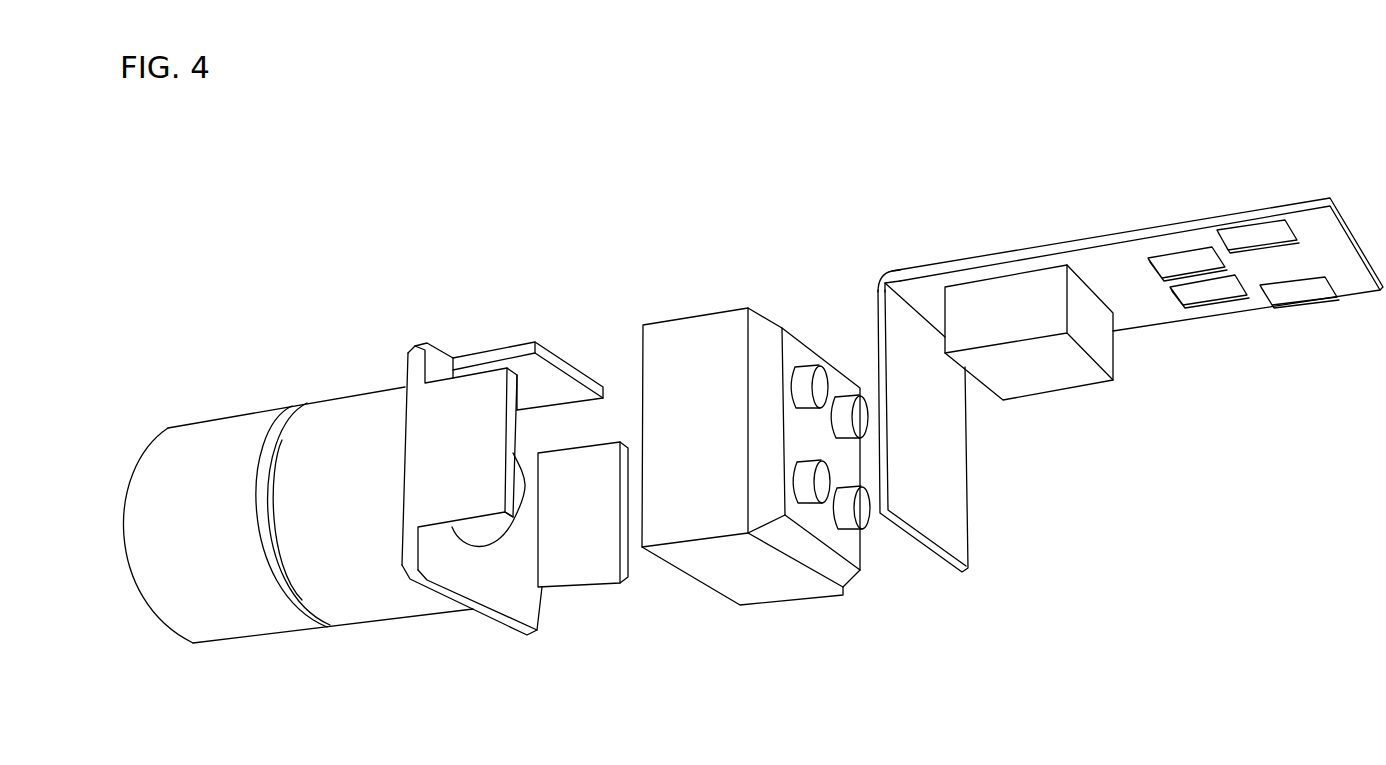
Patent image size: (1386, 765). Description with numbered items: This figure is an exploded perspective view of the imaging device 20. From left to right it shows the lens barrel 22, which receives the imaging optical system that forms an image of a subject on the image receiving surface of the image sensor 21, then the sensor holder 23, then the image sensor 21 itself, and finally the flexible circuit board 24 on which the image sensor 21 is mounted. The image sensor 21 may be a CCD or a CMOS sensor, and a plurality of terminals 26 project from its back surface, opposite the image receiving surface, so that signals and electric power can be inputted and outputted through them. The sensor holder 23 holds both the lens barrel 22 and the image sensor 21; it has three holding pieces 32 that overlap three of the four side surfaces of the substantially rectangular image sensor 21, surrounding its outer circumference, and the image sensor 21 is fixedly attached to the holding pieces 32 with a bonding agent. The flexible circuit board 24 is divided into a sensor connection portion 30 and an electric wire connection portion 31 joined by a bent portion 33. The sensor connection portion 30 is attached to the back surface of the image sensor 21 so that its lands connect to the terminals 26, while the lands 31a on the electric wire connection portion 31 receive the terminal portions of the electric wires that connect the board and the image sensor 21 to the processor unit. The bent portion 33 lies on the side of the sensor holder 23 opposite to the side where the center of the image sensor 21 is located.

The imaging device 20 is at (472, 182).
The image sensor 21 is at (683, 296).
The lens barrel 22 is at (217, 425).
The sensor holder 23 is at (353, 405).
The flexible circuit board 24 is at (918, 172).
The terminals 26 is at (810, 365).
The sensor connection portion 30 is at (873, 350).
The electric wire connection portion 31 is at (967, 258).
The lands 31a is at (1178, 262).
The holding pieces 32 is at (475, 390).
The bent portion 33 is at (872, 283).